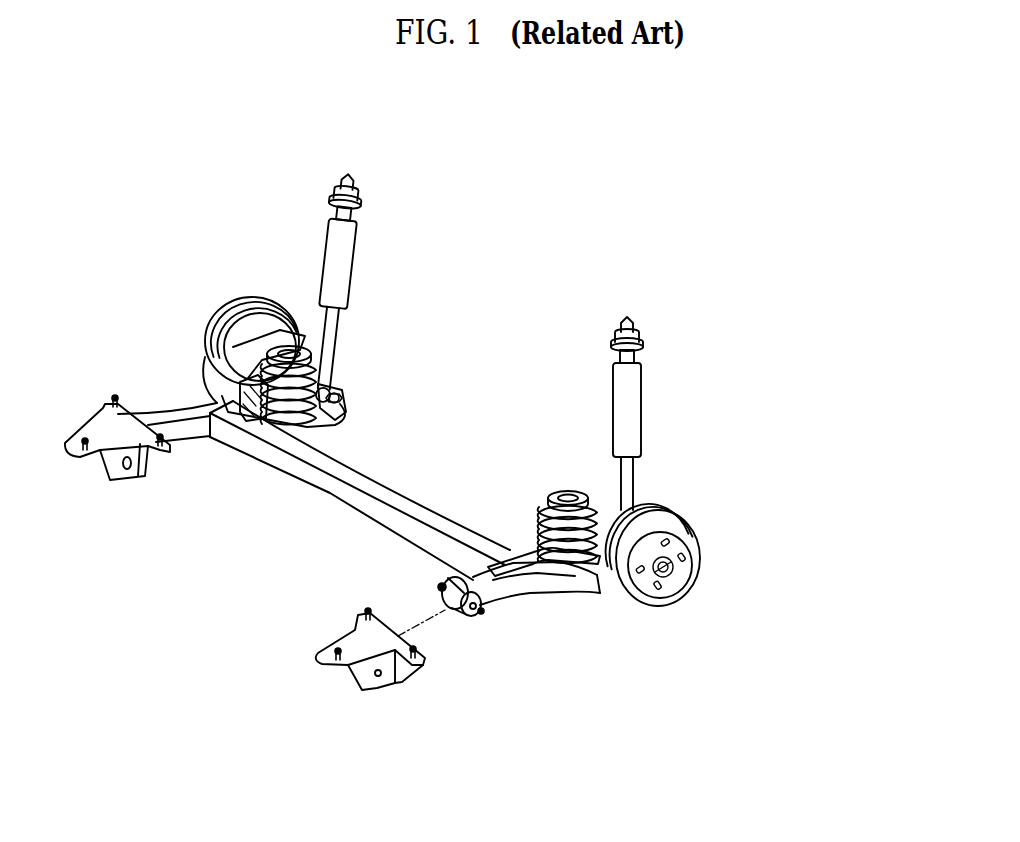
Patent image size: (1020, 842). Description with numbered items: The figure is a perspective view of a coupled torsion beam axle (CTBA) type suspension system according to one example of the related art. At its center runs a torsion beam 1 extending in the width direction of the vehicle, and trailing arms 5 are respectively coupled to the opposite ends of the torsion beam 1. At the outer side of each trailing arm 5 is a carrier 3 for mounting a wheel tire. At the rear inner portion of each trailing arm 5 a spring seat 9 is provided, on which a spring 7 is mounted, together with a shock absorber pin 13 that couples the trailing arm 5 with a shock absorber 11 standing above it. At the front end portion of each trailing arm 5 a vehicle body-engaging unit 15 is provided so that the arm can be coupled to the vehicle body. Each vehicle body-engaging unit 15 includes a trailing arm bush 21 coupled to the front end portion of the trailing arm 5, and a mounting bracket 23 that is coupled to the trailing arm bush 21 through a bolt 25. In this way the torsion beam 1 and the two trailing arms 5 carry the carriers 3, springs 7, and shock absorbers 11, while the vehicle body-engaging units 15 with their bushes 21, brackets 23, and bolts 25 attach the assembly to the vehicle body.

The torsion beam 1 is at (393, 502).
The carrier 3 is at (257, 296).
The trailing arm 5 is at (208, 400).
The spring 7 is at (318, 362).
The spring seat 9 is at (333, 417).
The shock absorber 11 is at (346, 260).
The shock absorber pin 13 is at (345, 398).
The vehicle body-engaging unit 15 is at (274, 542).
The trailing arm bush 21 is at (447, 598).
The mounting bracket 23 is at (107, 465).
The bolt 25 is at (130, 477).